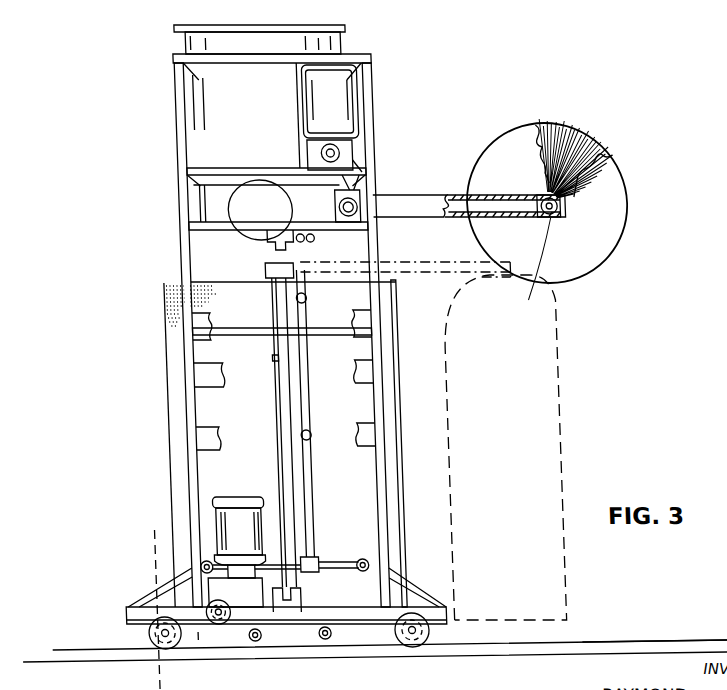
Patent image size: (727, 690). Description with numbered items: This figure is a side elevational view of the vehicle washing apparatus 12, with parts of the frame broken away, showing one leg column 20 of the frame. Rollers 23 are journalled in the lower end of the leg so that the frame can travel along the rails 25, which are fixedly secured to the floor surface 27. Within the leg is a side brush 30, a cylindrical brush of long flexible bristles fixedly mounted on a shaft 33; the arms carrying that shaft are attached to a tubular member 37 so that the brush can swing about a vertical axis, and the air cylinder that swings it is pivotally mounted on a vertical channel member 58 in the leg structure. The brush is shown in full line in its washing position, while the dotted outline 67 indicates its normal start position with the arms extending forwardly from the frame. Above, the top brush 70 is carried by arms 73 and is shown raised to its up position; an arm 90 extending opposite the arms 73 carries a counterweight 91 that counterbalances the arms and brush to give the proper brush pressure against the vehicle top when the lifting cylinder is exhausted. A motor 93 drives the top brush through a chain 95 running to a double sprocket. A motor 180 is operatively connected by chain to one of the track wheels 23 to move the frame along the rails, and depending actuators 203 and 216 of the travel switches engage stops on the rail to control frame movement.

The apparatus 12 is at (139, 553).
The leg column 20 is at (169, 390).
The rollers 23 is at (128, 642).
The rails 25 is at (598, 640).
The floor surface 27 is at (22, 655).
The side brush 30 is at (156, 341).
The shaft 33 is at (558, 205).
The tubular member 37 is at (268, 353).
The vertical channel member 58 is at (267, 244).
The dotted outline of start position 67 is at (509, 449).
The top brush 70 is at (562, 134).
The arms 73 is at (429, 200).
The arm 90 is at (303, 207).
The counterweight 91 is at (260, 210).
The motor 93 is at (313, 92).
The chain 95 is at (340, 172).
The motor 180 is at (217, 500).
The actuator 203 is at (236, 644).
The actuator 216 is at (308, 644).